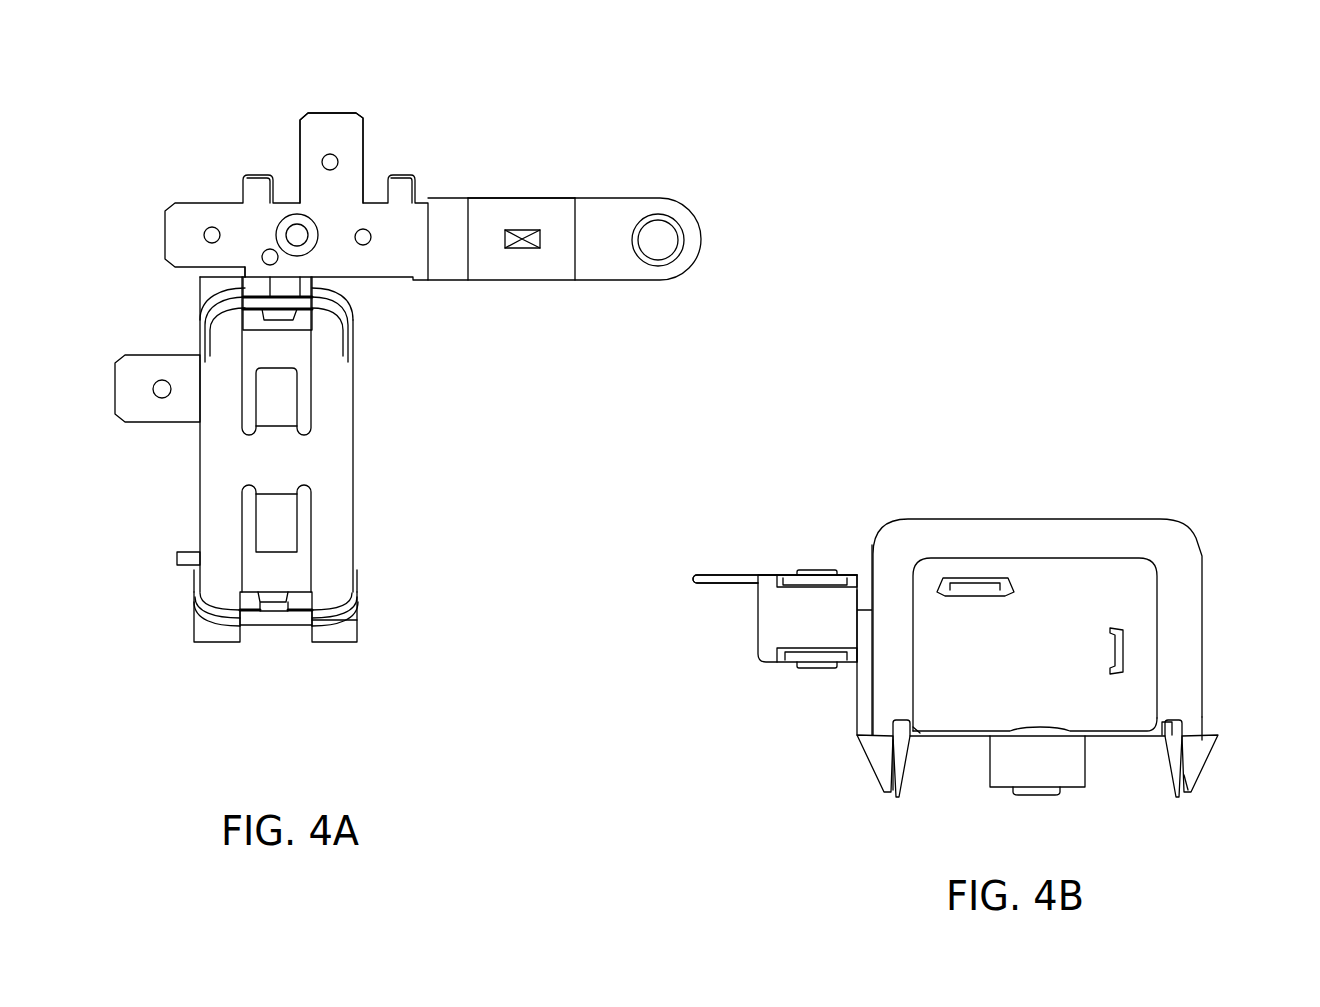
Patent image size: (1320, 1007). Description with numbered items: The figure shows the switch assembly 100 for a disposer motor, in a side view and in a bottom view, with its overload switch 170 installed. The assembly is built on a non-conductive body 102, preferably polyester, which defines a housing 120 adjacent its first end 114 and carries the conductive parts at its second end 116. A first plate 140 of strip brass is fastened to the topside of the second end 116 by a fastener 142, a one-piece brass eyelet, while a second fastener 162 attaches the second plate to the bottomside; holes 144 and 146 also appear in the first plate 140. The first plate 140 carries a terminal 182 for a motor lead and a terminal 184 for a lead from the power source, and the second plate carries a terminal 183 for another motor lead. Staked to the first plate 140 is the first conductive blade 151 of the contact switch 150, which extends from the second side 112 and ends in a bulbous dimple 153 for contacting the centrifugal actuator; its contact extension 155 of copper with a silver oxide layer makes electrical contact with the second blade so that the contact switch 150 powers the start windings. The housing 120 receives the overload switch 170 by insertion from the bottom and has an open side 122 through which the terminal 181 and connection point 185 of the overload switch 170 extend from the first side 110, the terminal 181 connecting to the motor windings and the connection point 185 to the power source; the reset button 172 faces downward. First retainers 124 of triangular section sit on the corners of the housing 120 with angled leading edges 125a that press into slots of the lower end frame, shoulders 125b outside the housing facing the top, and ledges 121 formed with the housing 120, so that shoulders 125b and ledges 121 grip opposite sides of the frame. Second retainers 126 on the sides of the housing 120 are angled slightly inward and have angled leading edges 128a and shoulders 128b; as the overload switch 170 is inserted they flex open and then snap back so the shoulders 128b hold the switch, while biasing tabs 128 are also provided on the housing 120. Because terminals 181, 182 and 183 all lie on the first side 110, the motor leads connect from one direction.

In FIG. 4A, the switch assembly 100 is at (176, 100).
In FIG. 4B, the switch assembly 100 is at (1179, 476).
In FIG. 4A, the body 102 is at (200, 328).
In FIG. 4A, the first side 110 is at (152, 482).
In FIG. 4A, the second side 112 is at (450, 485).
In FIG. 4A, the first end 114 is at (276, 715).
In FIG. 4B, the first end 114 is at (1214, 608).
In FIG. 4A, the second end 116 is at (290, 78).
In FIG. 4B, the second end 116 is at (680, 620).
In FIG. 4A, the housing 120 is at (356, 455).
In FIG. 4B, the housing 120 is at (960, 519).
In FIG. 4B, the ledges 121 is at (1176, 720).
In FIG. 4B, the open side 122 is at (1040, 570).
In FIG. 4A, the first retainers 124 is at (213, 656).
In FIG. 4B, the first retainers 124 is at (868, 766).
In FIG. 4B, the angled leading edges 125a is at (1206, 740).
In FIG. 4A, the shoulders 125b is at (358, 635).
In FIG. 4B, the shoulders 125b is at (1187, 776).
In FIG. 4A, the second retainers 126 is at (272, 614).
In FIG. 4B, the second retainers 126 is at (912, 757).
In FIG. 4A, the biasing tabs 128 is at (300, 410).
In FIG. 4B, the angled leading edges 128a is at (898, 797).
In FIG. 4B, the shoulders 128b is at (916, 731).
In FIG. 4A, the first plate 140 is at (415, 267).
In FIG. 4A, the fastener 142 is at (313, 226).
In FIG. 4B, the fastener 142 is at (816, 570).
In FIG. 4A, the hole 144 is at (370, 233).
In FIG. 4A, the hole 146 is at (263, 252).
In FIG. 4A, the contact switch 150 is at (646, 312).
In FIG. 4A, the first conductive blade 151 is at (518, 197).
In FIG. 4A, the bulbous dimple 153 is at (667, 214).
In FIG. 4A, the contact extension 155 is at (522, 250).
In FIG. 4B, the fastener 162 is at (812, 670).
In FIG. 4A, the overload switch 170 is at (288, 570).
In FIG. 4B, the overload switch 170 is at (1136, 574).
In FIG. 4B, the reset button 172 is at (1038, 797).
In FIG. 4A, the terminal 181 is at (128, 355).
In FIG. 4B, the terminal 181 is at (965, 596).
In FIG. 4A, the terminal 182 is at (172, 207).
In FIG. 4B, the terminal 182 is at (792, 576).
In FIG. 4B, the terminal 183 is at (786, 662).
In FIG. 4A, the terminal 184 is at (340, 113).
In FIG. 4B, the terminal 184 is at (703, 575).
In FIG. 4A, the connection point 185 is at (178, 566).
In FIG. 4B, the connection point 185 is at (1108, 640).